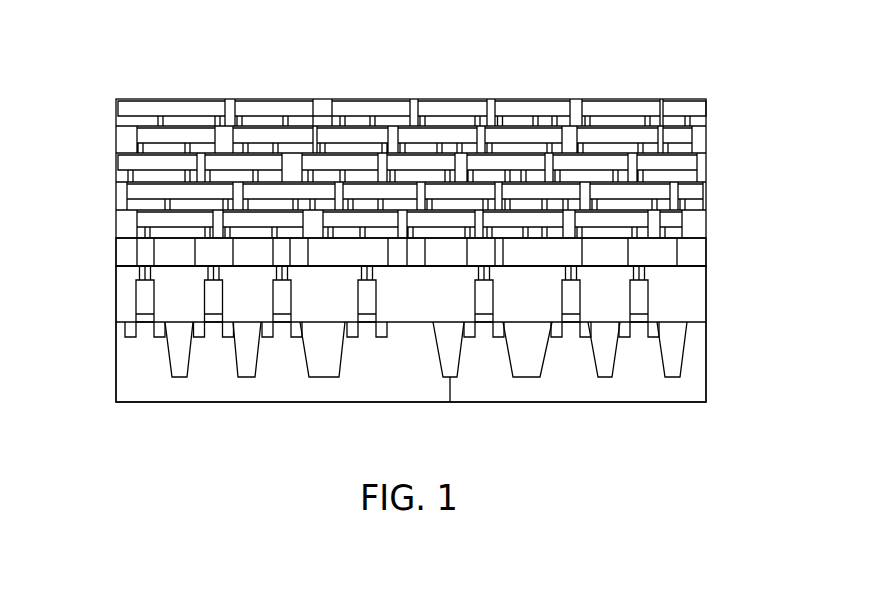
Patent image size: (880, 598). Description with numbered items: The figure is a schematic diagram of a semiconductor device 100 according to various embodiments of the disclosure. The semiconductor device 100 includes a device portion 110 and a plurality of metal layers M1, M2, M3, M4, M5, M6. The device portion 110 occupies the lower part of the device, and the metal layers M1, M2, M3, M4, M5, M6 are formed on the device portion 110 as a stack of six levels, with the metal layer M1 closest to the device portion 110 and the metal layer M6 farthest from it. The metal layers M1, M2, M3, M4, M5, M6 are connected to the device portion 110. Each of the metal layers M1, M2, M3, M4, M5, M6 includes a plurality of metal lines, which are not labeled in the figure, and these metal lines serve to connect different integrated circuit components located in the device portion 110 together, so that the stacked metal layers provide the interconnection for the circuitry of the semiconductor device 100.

The semiconductor device 100 is at (143, 25).
The device portion 110 is at (717, 266).
The metal layer M1 is at (95, 252).
The metal layer M2 is at (95, 224).
The metal layer M3 is at (95, 196).
The metal layer M4 is at (95, 168).
The metal layer M5 is at (95, 141).
The metal layer M6 is at (95, 113).